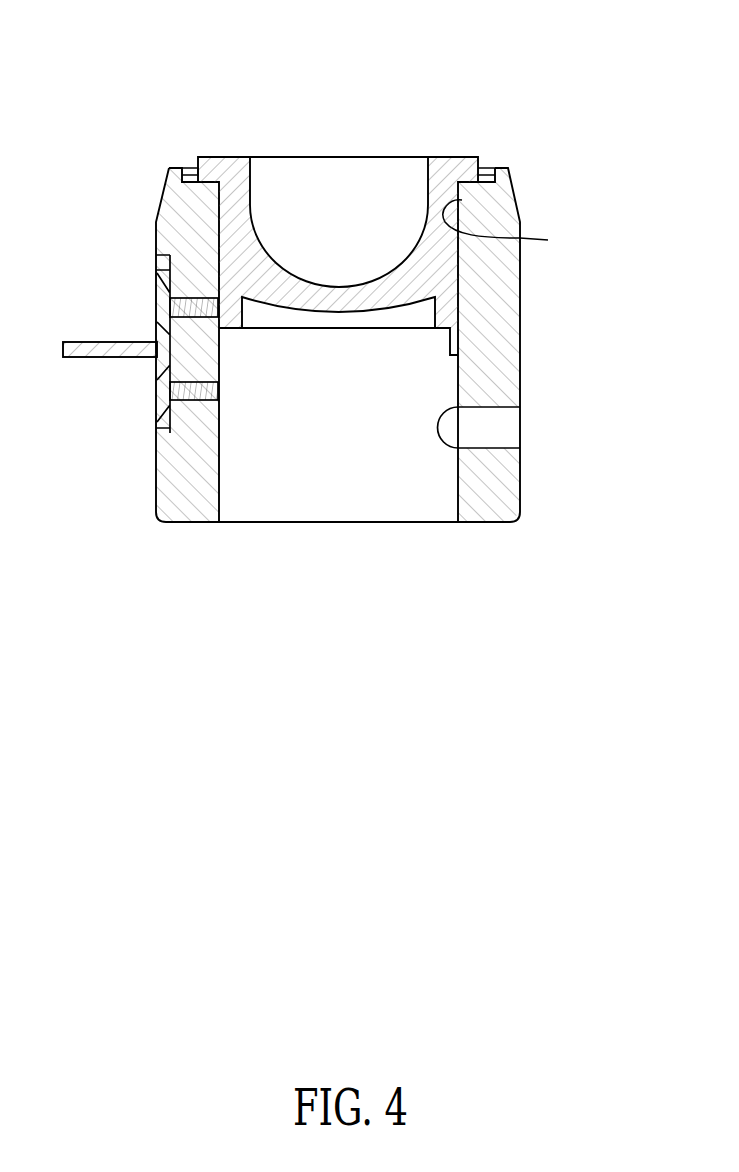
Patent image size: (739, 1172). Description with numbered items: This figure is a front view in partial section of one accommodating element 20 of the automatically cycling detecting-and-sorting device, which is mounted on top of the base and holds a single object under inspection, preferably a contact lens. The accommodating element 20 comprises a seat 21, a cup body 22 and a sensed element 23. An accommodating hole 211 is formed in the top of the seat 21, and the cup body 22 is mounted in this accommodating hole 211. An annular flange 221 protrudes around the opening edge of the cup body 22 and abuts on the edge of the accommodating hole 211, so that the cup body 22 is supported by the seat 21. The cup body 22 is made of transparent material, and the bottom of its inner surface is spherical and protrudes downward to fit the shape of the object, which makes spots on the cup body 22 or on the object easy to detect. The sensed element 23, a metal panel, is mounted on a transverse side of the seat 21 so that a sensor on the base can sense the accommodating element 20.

The accommodating element 20 is at (337, 271).
The seat 21 is at (387, 345).
The accommodating hole 211 is at (588, 195).
The cup body 22 is at (386, 215).
The annular flange 221 is at (480, 158).
The sensed element 23 is at (112, 347).